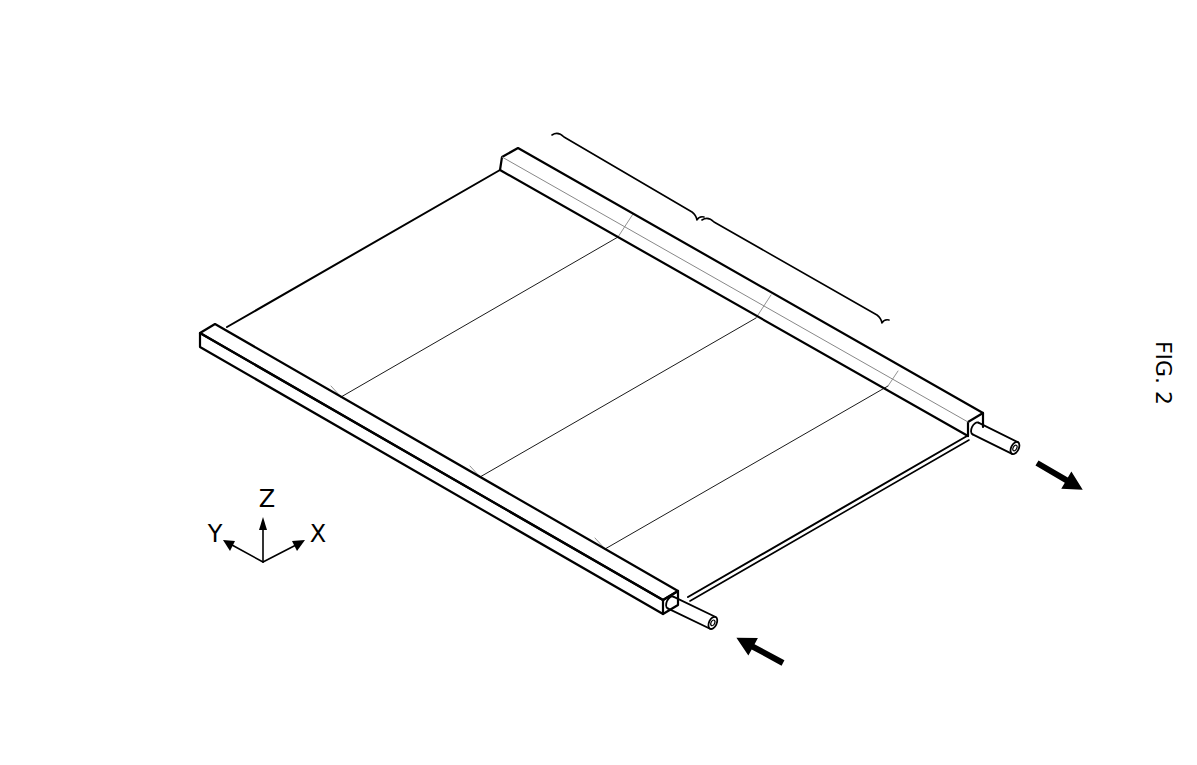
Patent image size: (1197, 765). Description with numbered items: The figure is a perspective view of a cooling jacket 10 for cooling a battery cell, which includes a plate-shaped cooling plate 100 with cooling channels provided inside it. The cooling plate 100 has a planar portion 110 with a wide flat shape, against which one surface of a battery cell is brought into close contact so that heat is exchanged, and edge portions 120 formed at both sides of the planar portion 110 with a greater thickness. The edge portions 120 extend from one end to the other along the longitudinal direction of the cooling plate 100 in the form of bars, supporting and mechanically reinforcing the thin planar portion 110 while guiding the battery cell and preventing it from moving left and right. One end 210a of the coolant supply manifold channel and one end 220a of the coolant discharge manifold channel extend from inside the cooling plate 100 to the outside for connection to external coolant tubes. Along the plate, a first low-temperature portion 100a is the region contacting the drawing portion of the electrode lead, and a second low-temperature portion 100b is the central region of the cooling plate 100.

The cooling jacket 10 is at (228, 97).
The cooling plate 100 is at (598, 367).
The first low-temperature portion 100a is at (628, 176).
The second low-temperature portion 100b is at (795, 270).
The planar portion 110 is at (445, 210).
The edge portion 120 is at (923, 387).
The one end of the coolant supply manifold channel 210a is at (695, 613).
The one end of the coolant discharge manifold channel 220a is at (997, 430).